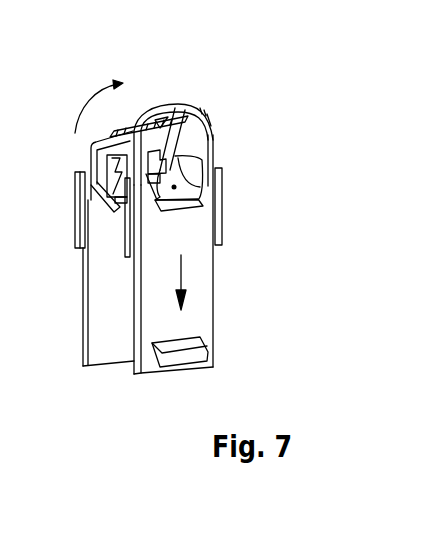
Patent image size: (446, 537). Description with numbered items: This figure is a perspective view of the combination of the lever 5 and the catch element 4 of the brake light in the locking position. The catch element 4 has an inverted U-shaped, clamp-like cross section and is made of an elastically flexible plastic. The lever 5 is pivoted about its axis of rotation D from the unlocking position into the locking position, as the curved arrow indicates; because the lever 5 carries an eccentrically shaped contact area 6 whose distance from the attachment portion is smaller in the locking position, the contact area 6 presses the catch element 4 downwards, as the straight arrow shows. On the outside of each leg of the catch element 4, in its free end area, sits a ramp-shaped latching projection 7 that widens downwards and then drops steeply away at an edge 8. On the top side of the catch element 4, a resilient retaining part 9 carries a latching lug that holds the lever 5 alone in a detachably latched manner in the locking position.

The catch element 4 is at (203, 280).
The lever 5 is at (180, 112).
The eccentrically shaped contact area 6 is at (180, 195).
The latching projection 7 is at (197, 352).
The edge 8 is at (170, 374).
The resilient retaining part 9 is at (160, 117).
The axis of rotation D is at (177, 186).